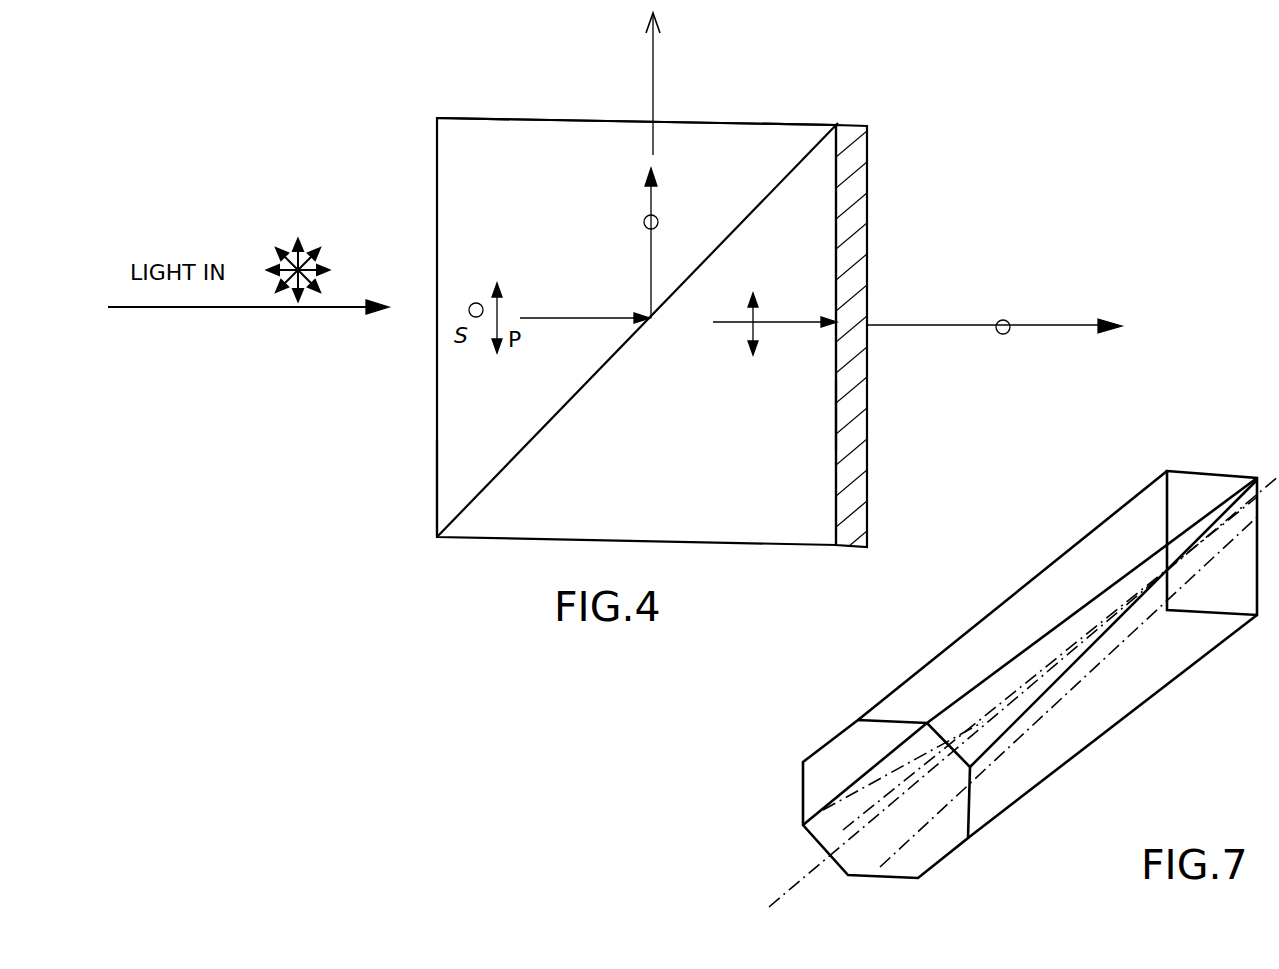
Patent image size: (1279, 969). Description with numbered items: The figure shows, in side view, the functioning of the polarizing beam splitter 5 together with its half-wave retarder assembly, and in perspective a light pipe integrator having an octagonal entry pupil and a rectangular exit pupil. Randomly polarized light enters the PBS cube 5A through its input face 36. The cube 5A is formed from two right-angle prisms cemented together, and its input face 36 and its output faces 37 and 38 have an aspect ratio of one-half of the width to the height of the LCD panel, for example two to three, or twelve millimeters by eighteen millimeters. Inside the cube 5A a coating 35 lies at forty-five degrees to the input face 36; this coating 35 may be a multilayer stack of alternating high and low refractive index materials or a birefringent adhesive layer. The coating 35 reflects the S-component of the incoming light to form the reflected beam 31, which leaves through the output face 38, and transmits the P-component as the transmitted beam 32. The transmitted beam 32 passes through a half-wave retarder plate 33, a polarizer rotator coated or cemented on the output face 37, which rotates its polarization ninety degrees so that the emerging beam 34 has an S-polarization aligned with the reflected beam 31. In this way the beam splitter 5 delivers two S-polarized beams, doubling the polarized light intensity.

The polarizing beam splitter 5 is at (662, 320).
The PBS cube 5A is at (473, 205).
The reflected beam 31 is at (658, 48).
The transmitted beam 32 is at (730, 322).
The half-wave retarder plate 33 is at (852, 518).
The beam transmitted through retarder plate 34 is at (895, 323).
The coating 35 is at (553, 412).
The input face 36 is at (432, 497).
The output face 37 is at (848, 428).
The output face 38 is at (478, 118).